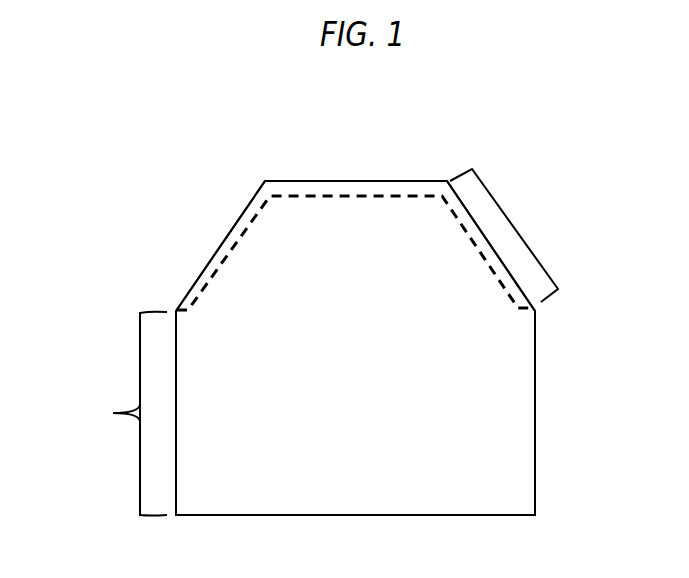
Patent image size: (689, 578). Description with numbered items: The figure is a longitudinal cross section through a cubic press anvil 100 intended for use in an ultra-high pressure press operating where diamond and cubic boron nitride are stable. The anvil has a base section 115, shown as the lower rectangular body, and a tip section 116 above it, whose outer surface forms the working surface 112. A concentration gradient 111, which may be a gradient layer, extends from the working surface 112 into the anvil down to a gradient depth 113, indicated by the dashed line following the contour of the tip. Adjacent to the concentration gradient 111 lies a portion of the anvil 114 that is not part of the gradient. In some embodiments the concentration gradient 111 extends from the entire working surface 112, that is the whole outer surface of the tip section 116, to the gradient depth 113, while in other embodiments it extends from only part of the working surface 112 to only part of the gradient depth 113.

The cubic press anvil 100 is at (240, 120).
The concentration gradient 111 is at (265, 183).
The working surface 112 is at (292, 182).
The gradient depth 113 is at (332, 196).
The portion of the anvil 114 is at (365, 217).
The base section 115 is at (118, 442).
The tip section 116 is at (517, 228).